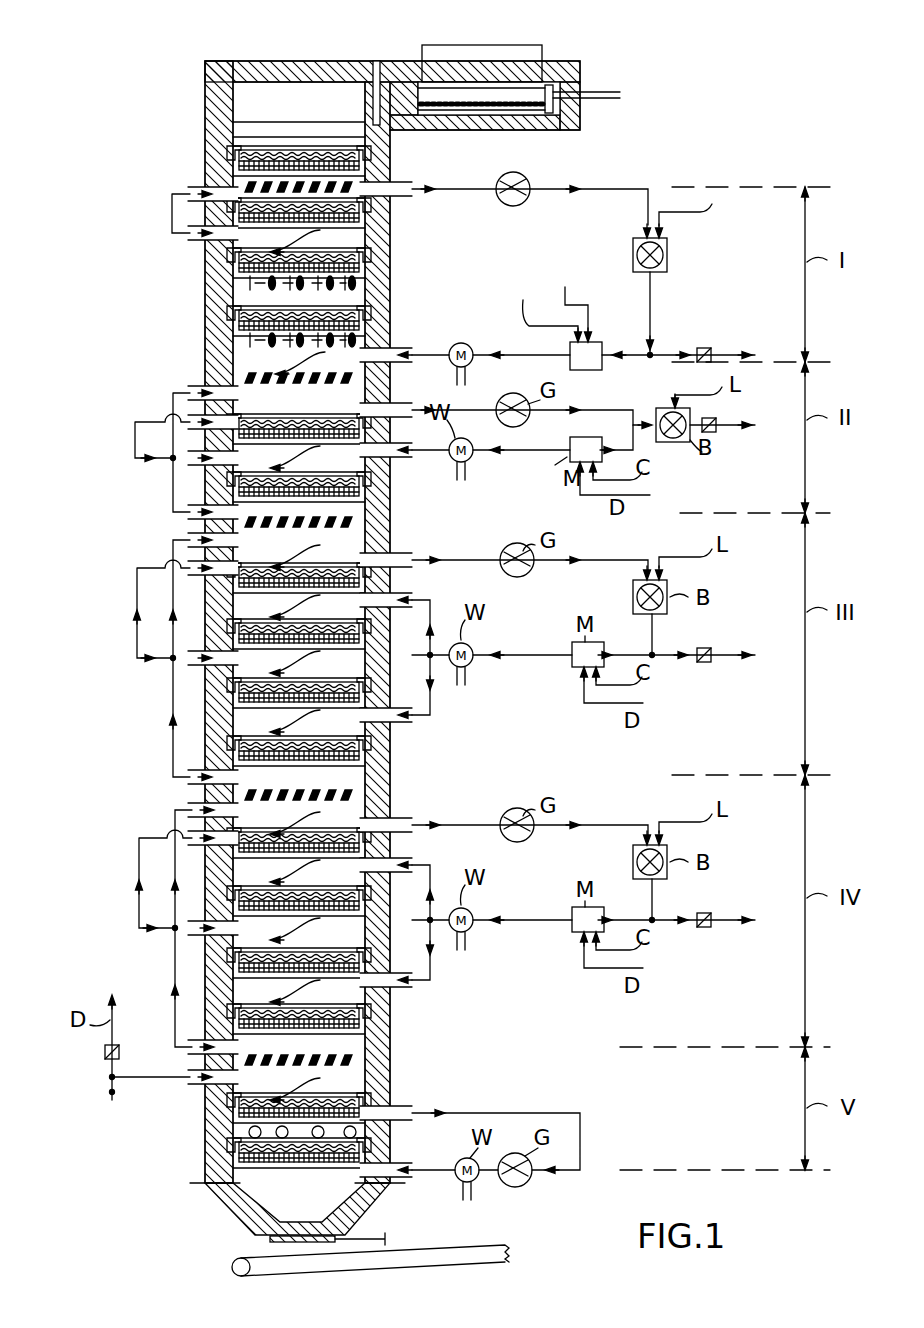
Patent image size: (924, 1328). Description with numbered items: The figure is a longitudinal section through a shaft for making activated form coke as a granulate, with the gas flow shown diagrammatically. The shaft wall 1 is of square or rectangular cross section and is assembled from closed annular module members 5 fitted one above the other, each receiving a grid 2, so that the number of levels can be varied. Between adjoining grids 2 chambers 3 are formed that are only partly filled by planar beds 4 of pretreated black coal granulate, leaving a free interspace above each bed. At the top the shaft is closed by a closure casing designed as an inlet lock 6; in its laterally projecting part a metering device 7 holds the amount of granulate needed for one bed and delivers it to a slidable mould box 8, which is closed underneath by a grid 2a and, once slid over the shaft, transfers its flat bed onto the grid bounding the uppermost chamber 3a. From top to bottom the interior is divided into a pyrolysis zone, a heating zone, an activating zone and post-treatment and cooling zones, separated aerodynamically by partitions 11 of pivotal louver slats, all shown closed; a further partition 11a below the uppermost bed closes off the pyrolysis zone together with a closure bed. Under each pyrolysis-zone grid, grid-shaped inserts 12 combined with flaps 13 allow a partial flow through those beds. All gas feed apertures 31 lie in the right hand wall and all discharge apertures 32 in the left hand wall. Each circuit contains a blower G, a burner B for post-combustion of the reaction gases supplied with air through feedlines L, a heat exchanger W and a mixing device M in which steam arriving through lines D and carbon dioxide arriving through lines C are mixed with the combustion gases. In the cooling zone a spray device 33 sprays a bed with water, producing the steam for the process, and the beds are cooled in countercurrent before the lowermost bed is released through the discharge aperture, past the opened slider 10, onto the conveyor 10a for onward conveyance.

The shaft wall 1 is at (400, 282).
The grids 2 is at (385, 175).
The grid 2a is at (470, 110).
The chambers 3 is at (236, 362).
The uppermost chamber 3a is at (238, 150).
The planar beds 4 is at (392, 262).
The annular module members 5 is at (390, 225).
The inlet lock 6 is at (207, 107).
The metering device 7 is at (522, 55).
The slidable mould box 8 is at (502, 92).
The slider 10 is at (380, 1237).
The conveyor 10a is at (504, 1246).
The partitions 11 is at (358, 526).
The further partition 11a is at (225, 182).
The grid-shaped inserts 12 is at (352, 345).
The flaps 13 is at (365, 240).
The gas feed apertures 31 is at (392, 592).
The discharge apertures 32 is at (230, 658).
The spray device 33 is at (240, 1132).
The blowers G is at (528, 184).
The burners B is at (668, 258).
The feedlines for the air L is at (694, 207).
The heat exchangers W is at (458, 344).
The mixing devices M is at (588, 372).
The lines for feeding the CO2 gas C is at (545, 308).
The lines for feeding the steam D is at (574, 302).